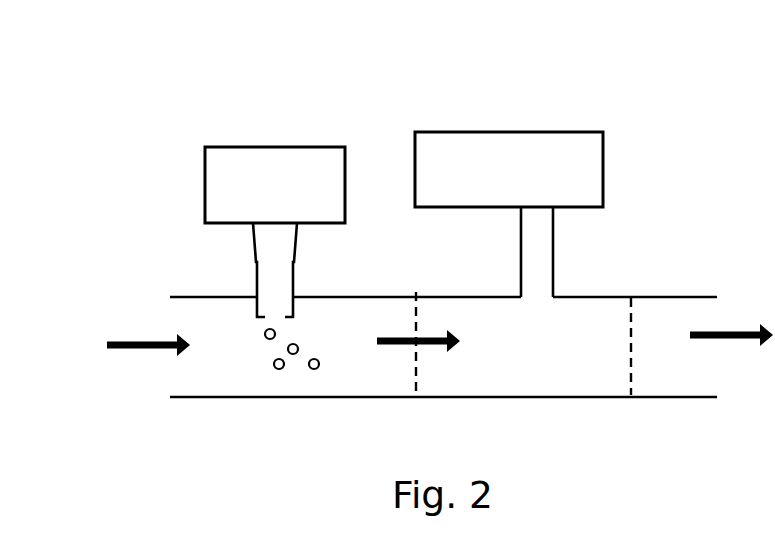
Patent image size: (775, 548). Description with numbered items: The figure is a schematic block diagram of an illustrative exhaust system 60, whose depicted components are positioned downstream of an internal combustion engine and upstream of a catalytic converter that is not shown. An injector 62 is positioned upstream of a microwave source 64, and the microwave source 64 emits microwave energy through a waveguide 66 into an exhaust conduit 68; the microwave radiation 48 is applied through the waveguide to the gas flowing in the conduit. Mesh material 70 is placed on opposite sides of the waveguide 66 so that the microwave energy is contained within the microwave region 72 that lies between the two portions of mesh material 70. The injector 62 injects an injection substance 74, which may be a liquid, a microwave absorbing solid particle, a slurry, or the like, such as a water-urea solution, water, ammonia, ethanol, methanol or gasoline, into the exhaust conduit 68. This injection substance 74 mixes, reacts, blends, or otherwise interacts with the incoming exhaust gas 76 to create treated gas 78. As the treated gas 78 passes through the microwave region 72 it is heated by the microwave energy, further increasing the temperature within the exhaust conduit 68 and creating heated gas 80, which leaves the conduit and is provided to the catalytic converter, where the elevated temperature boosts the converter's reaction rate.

The exhaust system 60 is at (231, 74).
The injector 62 is at (205, 183).
The microwave source 64 is at (604, 165).
The waveguide 66 is at (521, 252).
The microwave radiation 48 is at (547, 275).
The exhaust conduit 68 is at (626, 398).
The mesh material 70 is at (410, 315).
The microwave region 72 is at (539, 378).
The injection substance 74 is at (303, 380).
The incoming exhaust gas 76 is at (165, 349).
The treated gas 78 is at (432, 346).
The heated gas 80 is at (750, 340).